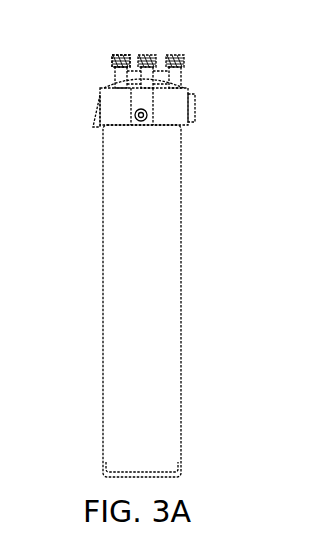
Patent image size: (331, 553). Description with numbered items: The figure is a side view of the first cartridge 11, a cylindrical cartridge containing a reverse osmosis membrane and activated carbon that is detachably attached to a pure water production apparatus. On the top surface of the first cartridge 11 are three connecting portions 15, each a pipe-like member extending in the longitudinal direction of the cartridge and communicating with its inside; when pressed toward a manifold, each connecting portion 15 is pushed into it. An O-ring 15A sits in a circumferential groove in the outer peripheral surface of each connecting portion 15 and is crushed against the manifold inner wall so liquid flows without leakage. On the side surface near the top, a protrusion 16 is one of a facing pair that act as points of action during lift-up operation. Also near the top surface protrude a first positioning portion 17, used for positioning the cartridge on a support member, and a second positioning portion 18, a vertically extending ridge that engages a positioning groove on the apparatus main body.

The first cartridge 11 is at (216, 51).
The connecting portion 15 is at (176, 55).
The O-ring 15A is at (113, 60).
The protrusion 16 is at (147, 117).
The first positioning portion 17 is at (94, 116).
The second positioning portion 18 is at (193, 107).